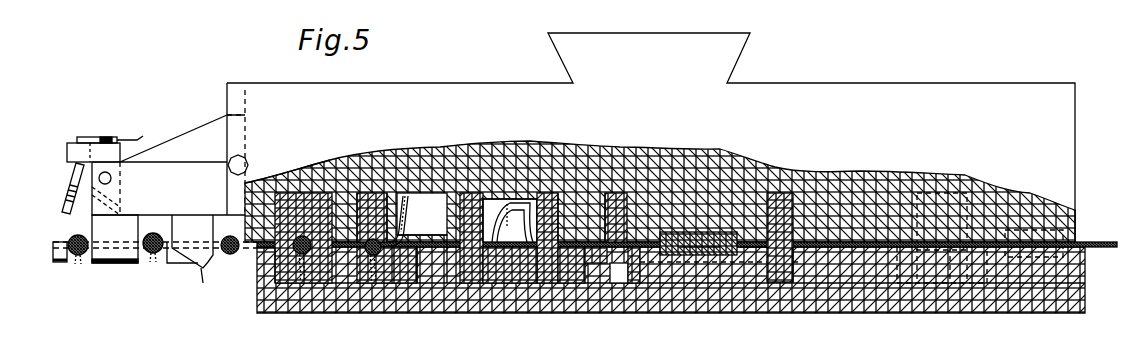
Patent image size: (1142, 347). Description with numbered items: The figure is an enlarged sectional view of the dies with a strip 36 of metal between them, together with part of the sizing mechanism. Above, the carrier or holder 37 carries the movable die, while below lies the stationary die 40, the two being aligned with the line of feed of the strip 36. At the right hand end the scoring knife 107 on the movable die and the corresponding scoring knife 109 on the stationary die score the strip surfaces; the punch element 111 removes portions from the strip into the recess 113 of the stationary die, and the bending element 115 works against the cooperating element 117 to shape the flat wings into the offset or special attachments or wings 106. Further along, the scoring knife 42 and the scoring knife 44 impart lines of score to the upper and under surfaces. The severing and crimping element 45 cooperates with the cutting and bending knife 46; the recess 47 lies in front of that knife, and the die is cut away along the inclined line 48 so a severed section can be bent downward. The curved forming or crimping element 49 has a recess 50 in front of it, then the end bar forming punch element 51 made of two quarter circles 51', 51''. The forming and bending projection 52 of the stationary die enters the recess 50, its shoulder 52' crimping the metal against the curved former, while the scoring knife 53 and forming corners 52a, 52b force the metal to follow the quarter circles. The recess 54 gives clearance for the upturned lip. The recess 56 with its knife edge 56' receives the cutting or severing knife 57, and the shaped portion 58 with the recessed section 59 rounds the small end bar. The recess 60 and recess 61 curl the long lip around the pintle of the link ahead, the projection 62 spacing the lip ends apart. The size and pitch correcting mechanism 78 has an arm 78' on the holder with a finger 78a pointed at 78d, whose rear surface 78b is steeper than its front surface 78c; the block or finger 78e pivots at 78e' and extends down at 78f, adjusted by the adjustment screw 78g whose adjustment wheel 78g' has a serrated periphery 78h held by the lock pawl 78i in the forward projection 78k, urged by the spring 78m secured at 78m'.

The strip 36 is at (1093, 243).
The carrier or holder 37 is at (867, 90).
The stationary die 40 is at (1038, 305).
The scoring knife 42 is at (697, 246).
The scoring knife 44 is at (694, 284).
The severing and crimping element 45 is at (630, 243).
The cutting and bending knife 46 is at (631, 262).
The recess 47 is at (618, 278).
The inclined line 48 is at (598, 250).
The curved forming or crimping element 49 is at (563, 245).
The recess 50 is at (546, 242).
The end bar forming punch element 51 is at (510, 183).
The quarter circle 51' is at (528, 183).
The quarter circle 51'' is at (477, 183).
The forming and bending projection 52 is at (543, 200).
The shoulder 52' is at (559, 295).
The forming corner 52a is at (502, 270).
The forming corner 52b is at (458, 250).
The scoring knife 53 is at (472, 262).
The recess 54 is at (423, 200).
The recess 56 is at (397, 267).
The knife edge 56' is at (378, 295).
The cutting or severing knife 57 is at (388, 192).
The shaped portion 58 is at (354, 190).
The recessed section 59 is at (363, 280).
The recess 60 is at (303, 240).
The recess 61 is at (308, 270).
The projection 62 is at (272, 312).
The offset or special attachments or wings 106 is at (755, 266).
The scoring knife 107 is at (1068, 232).
The scoring knife 109 is at (1068, 262).
The punch element 111 is at (970, 192).
The recess 113 is at (946, 313).
The bending element 115 is at (790, 194).
The cooperating element 117 is at (787, 283).
The size and pitch correcting mechanism 78 is at (168, 165).
The arm 78' is at (123, 146).
The finger 78a is at (200, 224).
The rear surface 78b is at (214, 261).
The front surface 78c is at (173, 268).
The pointed lower end 78d is at (204, 273).
The block or finger 78e is at (136, 239).
The pivot 78e' is at (128, 178).
The downward extension 78f is at (117, 265).
The adjustment screw 78g is at (73, 240).
The adjustment wheel 78g' is at (49, 194).
The toothed or serrated periphery 78h is at (62, 213).
The lock pawl 78i is at (92, 137).
The forward projection 78k is at (80, 145).
The spring 78m is at (123, 123).
The spring securing point 78m' is at (157, 124).